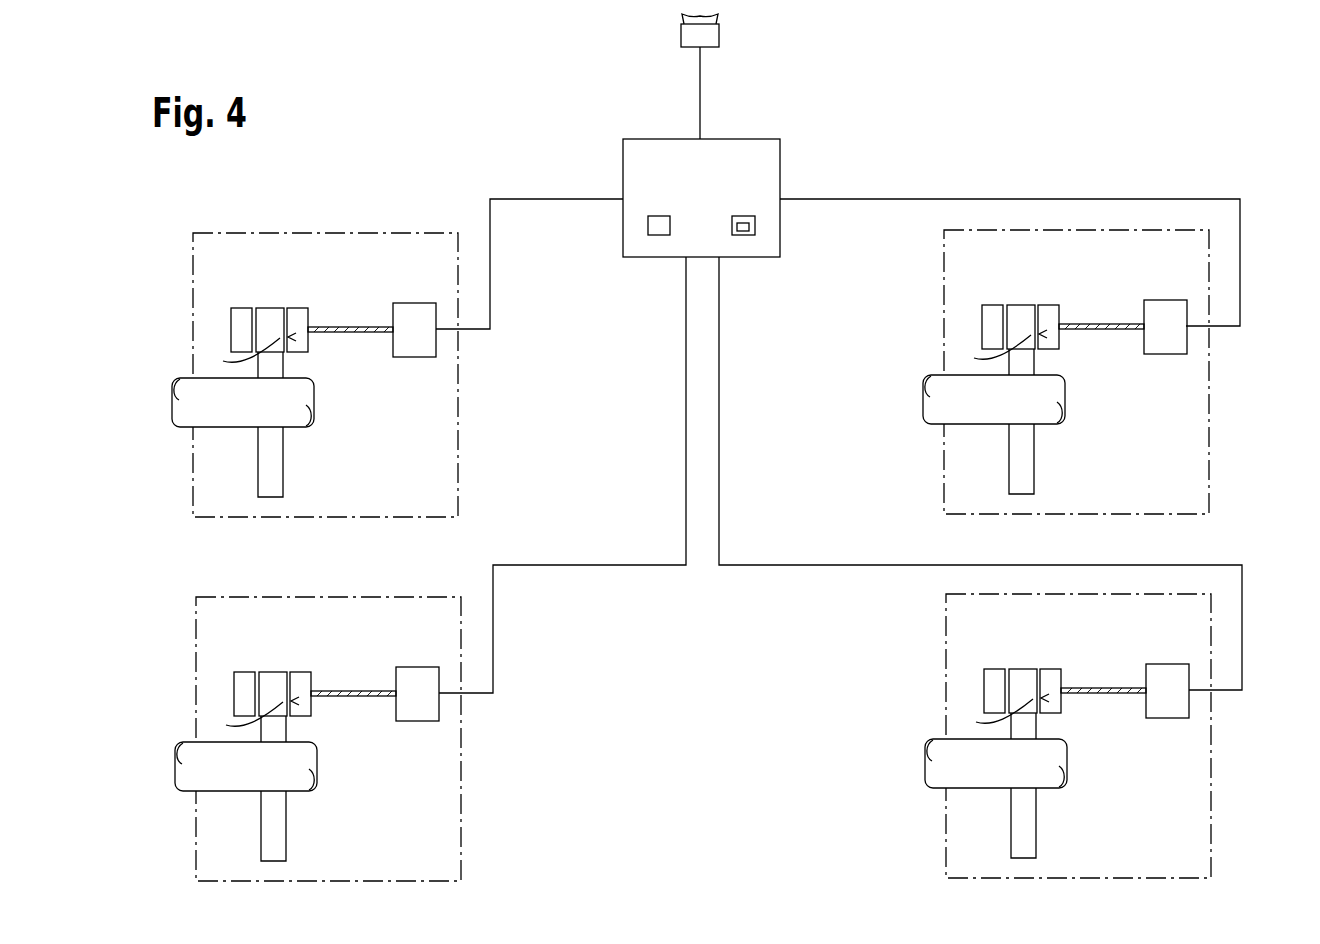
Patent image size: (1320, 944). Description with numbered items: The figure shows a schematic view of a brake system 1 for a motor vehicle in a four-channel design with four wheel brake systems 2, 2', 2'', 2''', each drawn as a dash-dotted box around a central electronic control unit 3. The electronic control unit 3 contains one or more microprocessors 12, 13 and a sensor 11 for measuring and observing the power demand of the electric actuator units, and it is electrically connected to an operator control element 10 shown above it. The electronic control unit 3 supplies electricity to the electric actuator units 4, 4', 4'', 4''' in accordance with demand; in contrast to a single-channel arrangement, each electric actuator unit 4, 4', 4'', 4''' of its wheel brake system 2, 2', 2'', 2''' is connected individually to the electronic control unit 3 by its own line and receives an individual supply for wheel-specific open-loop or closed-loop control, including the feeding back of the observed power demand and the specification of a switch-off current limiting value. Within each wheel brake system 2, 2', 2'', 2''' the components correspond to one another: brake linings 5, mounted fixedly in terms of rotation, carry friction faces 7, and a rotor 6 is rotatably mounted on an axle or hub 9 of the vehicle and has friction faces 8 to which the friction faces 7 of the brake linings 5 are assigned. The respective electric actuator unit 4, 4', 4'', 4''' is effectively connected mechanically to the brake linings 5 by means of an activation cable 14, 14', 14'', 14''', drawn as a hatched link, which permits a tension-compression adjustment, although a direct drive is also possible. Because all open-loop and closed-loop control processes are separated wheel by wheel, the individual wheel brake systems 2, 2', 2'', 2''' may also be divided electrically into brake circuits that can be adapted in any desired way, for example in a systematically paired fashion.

The brake system 1 is at (738, 120).
The wheel brake system 2 is at (355, 375).
The wheel brake system 2' is at (1110, 372).
The wheel brake system 2'' is at (364, 739).
The wheel brake system 2''' is at (1117, 736).
The electronic control unit 3 is at (656, 139).
The electric actuator unit 4 is at (414, 303).
The electric actuator unit 4' is at (1165, 300).
The electric actuator unit 4'' is at (417, 667).
The electric actuator unit 4''' is at (1169, 664).
The brake linings 5 is at (241, 316).
The rotor 6 is at (268, 316).
The friction faces 7 is at (290, 338).
The friction faces 8 is at (620, 536).
The axle or hub 9 is at (232, 412).
The operator control element 10 is at (683, 38).
The sensor 11 is at (659, 216).
The microprocessor 12 is at (743, 216).
The microprocessor 13 is at (743, 235).
The activation cable 14 is at (350, 364).
The activation cable 14' is at (1104, 361).
The activation cable 14'' is at (359, 728).
The activation cable 14''' is at (1112, 725).